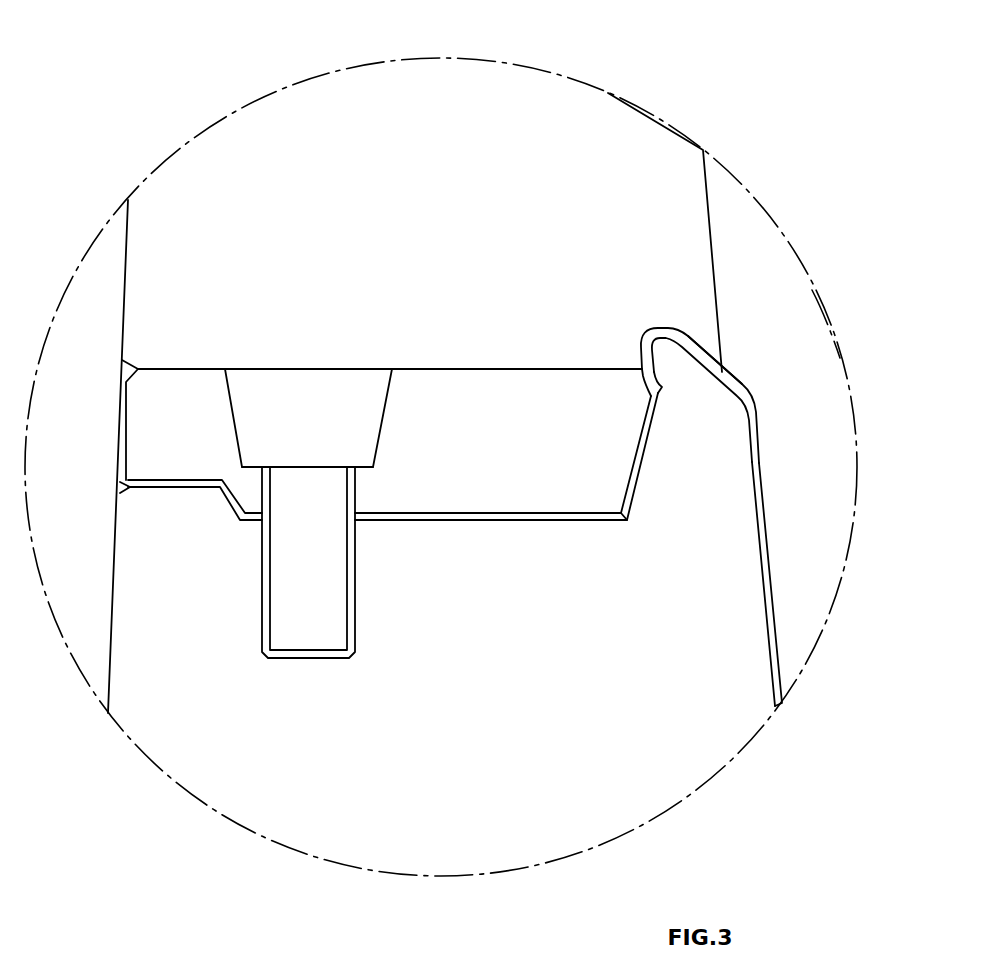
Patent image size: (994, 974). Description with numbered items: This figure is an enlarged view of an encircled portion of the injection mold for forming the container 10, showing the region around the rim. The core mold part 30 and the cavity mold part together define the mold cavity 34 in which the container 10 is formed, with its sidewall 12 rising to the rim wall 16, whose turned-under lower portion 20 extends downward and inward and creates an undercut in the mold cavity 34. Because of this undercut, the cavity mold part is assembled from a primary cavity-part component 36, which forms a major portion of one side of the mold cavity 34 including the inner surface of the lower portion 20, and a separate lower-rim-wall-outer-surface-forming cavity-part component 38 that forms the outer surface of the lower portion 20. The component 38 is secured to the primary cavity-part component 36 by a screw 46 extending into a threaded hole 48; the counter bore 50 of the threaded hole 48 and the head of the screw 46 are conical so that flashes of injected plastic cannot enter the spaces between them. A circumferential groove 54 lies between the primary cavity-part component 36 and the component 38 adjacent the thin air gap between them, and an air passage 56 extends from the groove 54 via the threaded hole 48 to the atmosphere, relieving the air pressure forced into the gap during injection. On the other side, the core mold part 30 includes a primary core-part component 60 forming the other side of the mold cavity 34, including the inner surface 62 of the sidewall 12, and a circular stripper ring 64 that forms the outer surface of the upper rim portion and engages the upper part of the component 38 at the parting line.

The container 10 is at (660, 323).
The sidewall 12 is at (758, 483).
The rim wall 16 is at (650, 337).
The lower portion 20 is at (667, 387).
The core mold part 30 is at (748, 192).
The mold cavity 34 is at (758, 537).
The primary cavity-part component 36 is at (185, 758).
The lower-rim-wall-outer-surface-forming cavity-part component 38 is at (512, 392).
The screw 46 is at (312, 388).
The threaded hole 48 is at (262, 600).
The counter bore 50 is at (353, 423).
The circumferential groove 54 is at (643, 415).
The air passage 56 is at (632, 493).
The primary core-part component 60 is at (813, 330).
The inner surface 62 is at (740, 393).
The circular stripper ring 64 is at (598, 112).